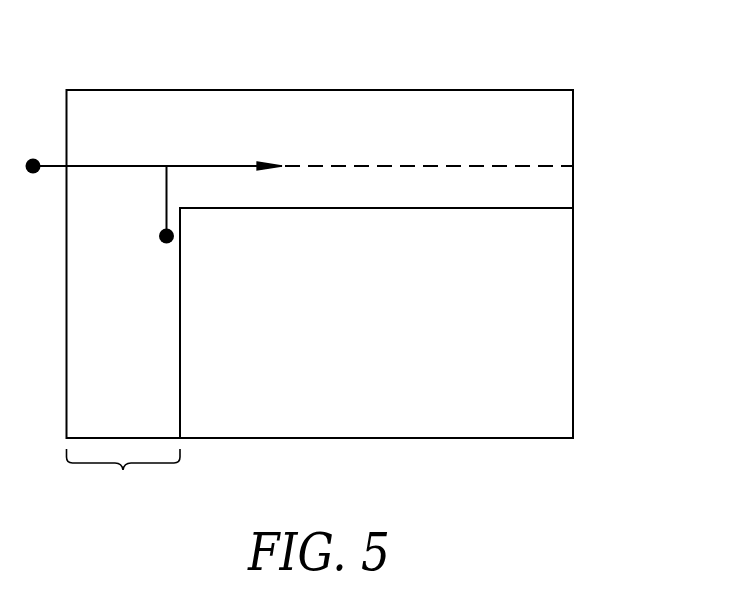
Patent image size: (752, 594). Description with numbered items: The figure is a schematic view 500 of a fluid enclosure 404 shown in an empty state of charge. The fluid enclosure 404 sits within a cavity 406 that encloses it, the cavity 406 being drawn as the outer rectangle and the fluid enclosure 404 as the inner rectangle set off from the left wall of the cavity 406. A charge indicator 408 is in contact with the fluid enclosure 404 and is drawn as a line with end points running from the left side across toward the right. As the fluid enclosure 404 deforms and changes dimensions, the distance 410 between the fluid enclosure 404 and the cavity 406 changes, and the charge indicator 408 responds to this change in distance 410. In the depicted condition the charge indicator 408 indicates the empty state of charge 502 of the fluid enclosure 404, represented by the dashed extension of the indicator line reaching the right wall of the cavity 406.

The optical system layout 500 is at (362, 257).
The cavity 406 is at (319, 89).
The fluid enclosure 404 is at (573, 291).
The charge indicator 408 is at (120, 165).
The empty state of charge 502 is at (573, 166).
The distance 410 is at (124, 480).